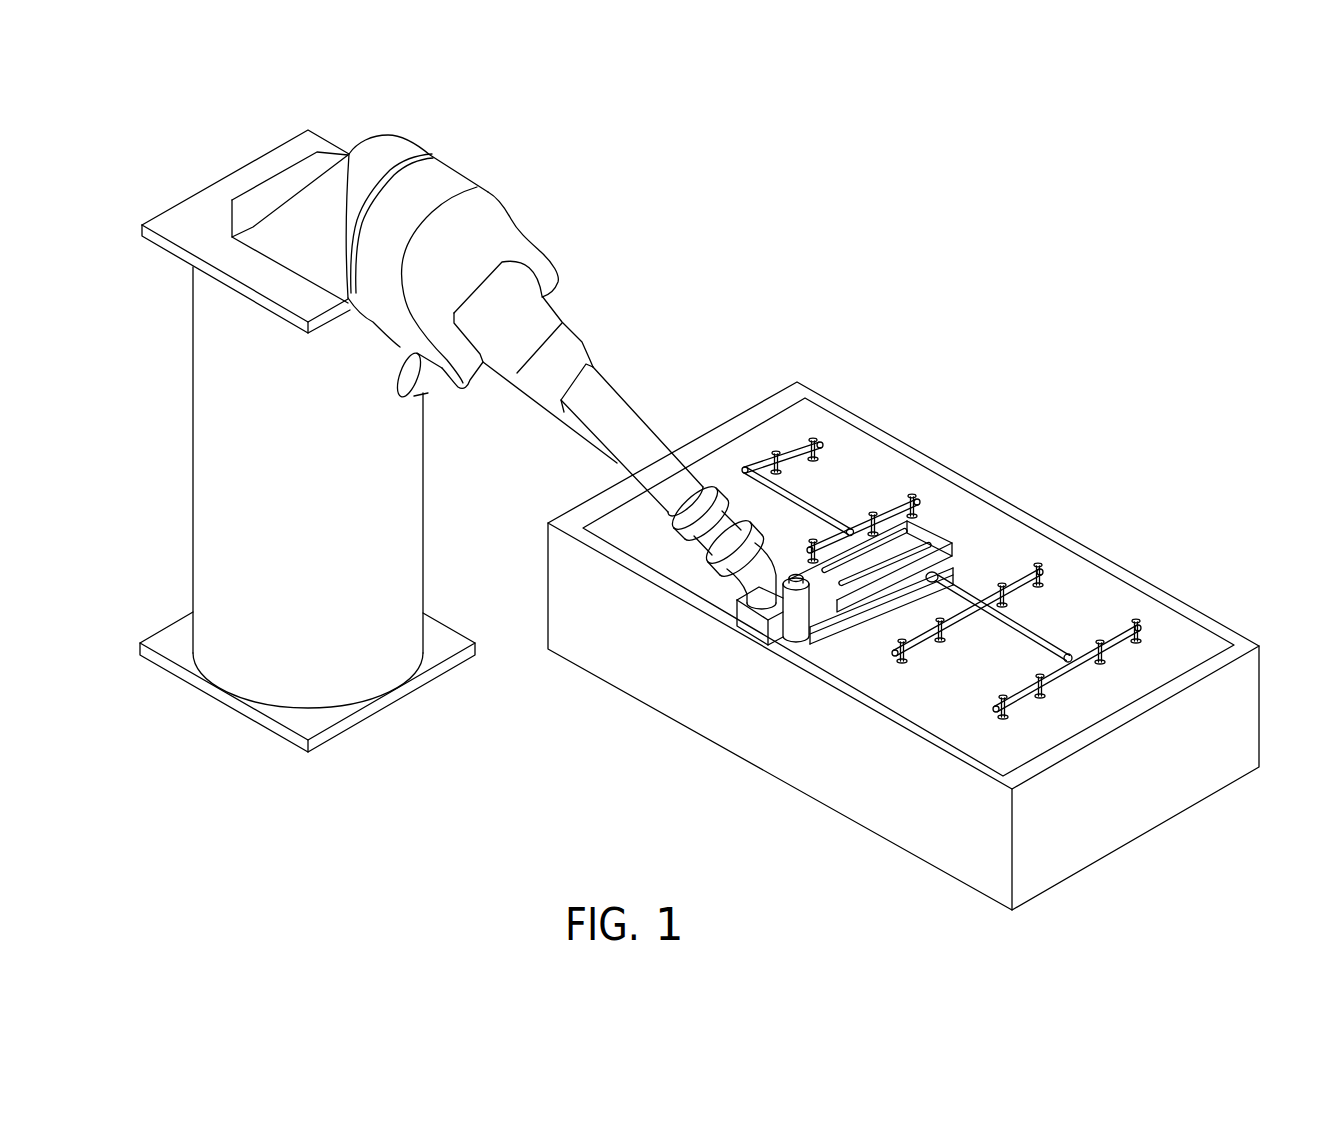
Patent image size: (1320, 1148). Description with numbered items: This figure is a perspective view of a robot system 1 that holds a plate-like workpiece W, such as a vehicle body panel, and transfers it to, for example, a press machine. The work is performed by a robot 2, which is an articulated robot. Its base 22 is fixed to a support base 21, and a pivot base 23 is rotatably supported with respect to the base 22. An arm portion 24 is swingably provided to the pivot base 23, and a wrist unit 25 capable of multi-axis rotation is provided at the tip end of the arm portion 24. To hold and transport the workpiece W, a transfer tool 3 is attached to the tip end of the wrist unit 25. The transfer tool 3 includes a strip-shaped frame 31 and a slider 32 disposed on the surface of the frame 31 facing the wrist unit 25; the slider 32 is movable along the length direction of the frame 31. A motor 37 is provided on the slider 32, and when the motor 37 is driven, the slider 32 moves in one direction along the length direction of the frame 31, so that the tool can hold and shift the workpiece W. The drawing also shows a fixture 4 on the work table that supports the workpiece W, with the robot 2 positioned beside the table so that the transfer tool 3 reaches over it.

The robot system 1 is at (750, 141).
The robot 2 is at (633, 340).
The support base 21 is at (202, 208).
The base 22 is at (400, 148).
The pivot base 23 is at (447, 175).
The arm portion 24 is at (647, 440).
The wrist unit 25 is at (742, 577).
The transfer tool 3 is at (948, 520).
The frame 31 is at (950, 556).
The slider 32 is at (752, 615).
The motor 37 is at (793, 618).
The fixture 4 is at (1118, 627).
The workpiece W is at (880, 462).